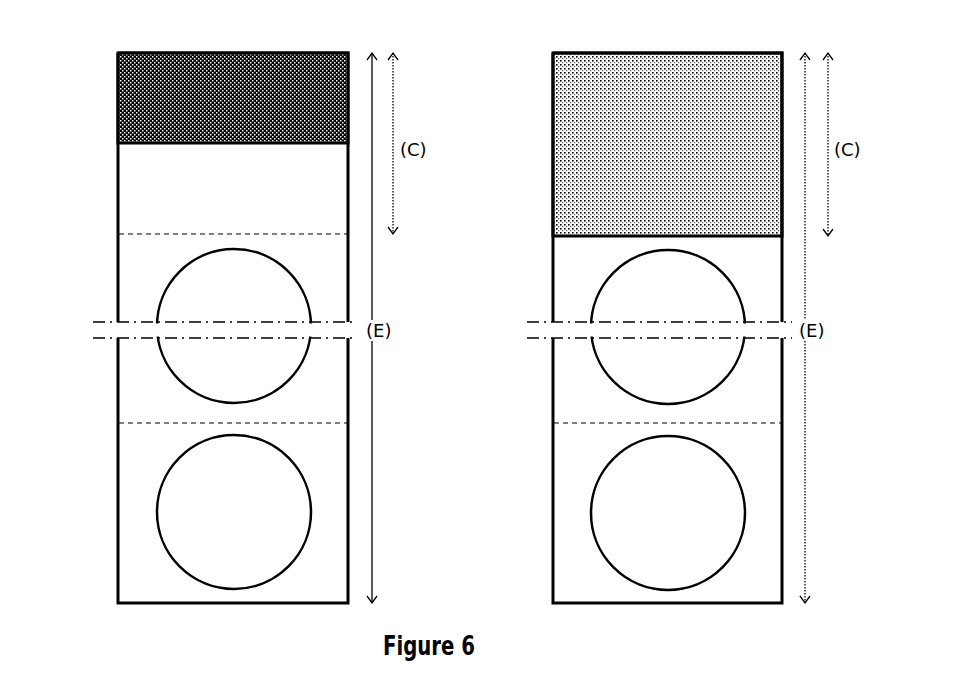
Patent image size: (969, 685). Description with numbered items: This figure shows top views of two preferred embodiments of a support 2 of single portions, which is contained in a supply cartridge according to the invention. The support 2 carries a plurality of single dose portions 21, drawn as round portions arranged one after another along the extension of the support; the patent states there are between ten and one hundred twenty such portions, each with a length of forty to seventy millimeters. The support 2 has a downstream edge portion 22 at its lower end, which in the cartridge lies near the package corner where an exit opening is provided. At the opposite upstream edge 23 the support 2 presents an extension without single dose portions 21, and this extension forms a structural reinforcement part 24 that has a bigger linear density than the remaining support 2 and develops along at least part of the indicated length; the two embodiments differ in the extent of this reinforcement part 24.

The support of single portions 2 is at (414, 317).
The single dose portions 21 is at (433, 424).
The downstream edge portion 22 is at (424, 328).
The upstream edge 23 is at (427, 144).
The structural reinforcement part 24 is at (450, 145).